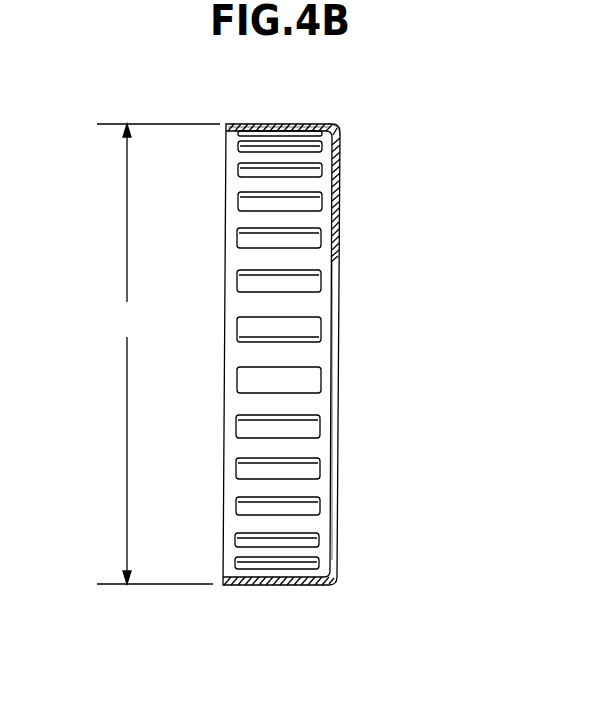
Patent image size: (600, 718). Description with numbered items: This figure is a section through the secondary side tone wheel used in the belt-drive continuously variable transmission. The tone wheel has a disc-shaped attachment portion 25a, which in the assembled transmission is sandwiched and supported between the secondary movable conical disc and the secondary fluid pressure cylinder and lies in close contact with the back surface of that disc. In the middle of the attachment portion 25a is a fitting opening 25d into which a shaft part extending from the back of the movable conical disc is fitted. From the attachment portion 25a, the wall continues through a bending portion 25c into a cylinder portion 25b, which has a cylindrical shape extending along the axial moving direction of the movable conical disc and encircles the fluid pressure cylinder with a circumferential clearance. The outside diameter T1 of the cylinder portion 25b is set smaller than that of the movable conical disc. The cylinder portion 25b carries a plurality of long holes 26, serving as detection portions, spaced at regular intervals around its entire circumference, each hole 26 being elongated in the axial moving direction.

The attachment portion 25a is at (340, 172).
The cylinder portion 25b is at (277, 123).
The bending portion 25c is at (337, 123).
The fitting opening 25d is at (336, 262).
The long holes 26 is at (252, 328).
The outside diameter T1 is at (158, 354).